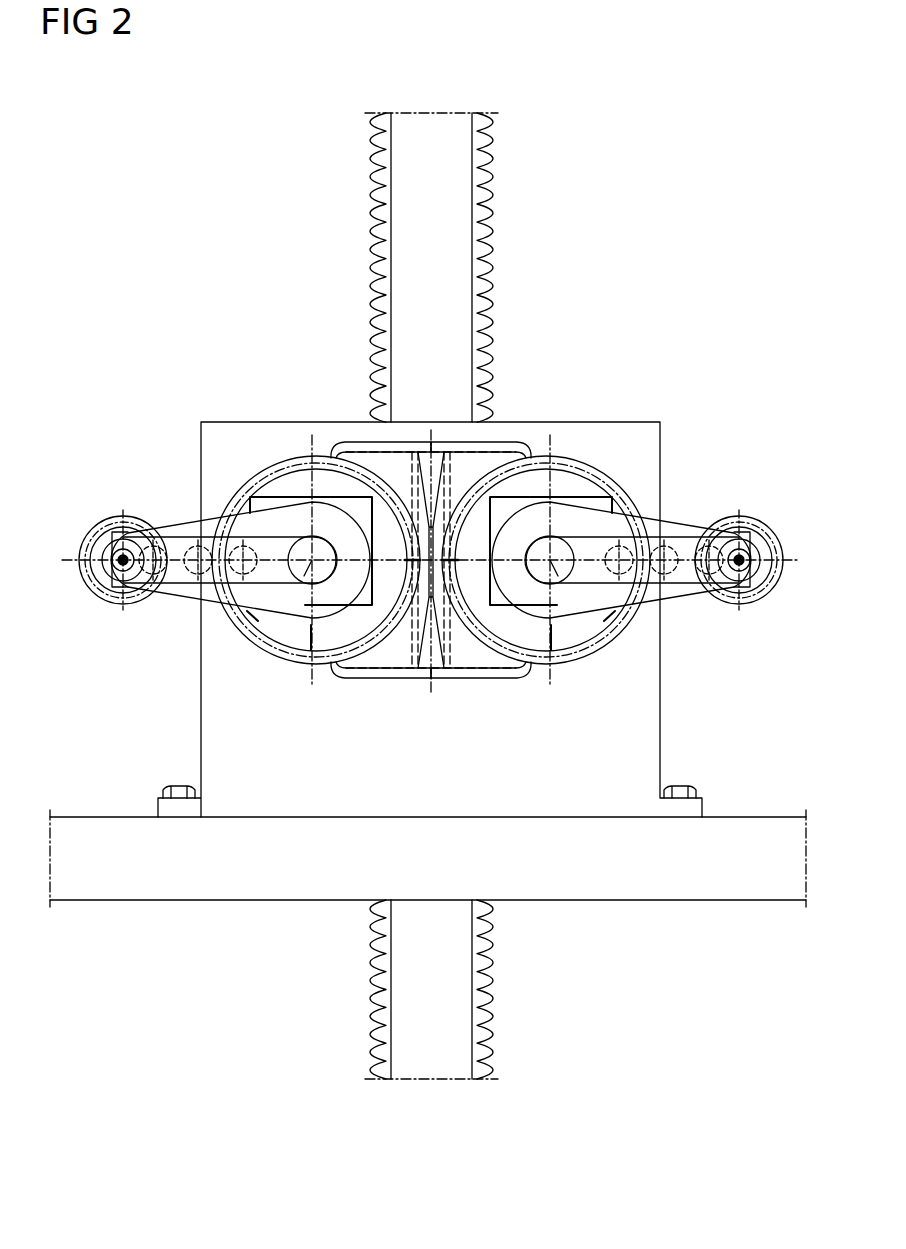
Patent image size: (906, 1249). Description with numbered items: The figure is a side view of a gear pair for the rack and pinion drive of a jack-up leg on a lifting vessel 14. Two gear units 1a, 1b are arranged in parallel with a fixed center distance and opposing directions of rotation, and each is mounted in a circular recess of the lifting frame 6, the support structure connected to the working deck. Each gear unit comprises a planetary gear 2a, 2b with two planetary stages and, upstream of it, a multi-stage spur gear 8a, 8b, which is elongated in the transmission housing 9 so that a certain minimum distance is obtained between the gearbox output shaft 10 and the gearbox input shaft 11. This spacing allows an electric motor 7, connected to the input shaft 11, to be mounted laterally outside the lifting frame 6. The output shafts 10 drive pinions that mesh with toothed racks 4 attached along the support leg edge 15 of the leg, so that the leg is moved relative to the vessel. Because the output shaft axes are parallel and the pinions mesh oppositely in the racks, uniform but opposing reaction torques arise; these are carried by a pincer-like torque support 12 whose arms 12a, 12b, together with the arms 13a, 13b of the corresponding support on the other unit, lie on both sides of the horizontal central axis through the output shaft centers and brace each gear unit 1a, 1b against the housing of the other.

The gear unit 1a is at (148, 422).
The gear unit 1b is at (724, 422).
The planetary gear 2a is at (270, 656).
The planetary gear 2b is at (607, 656).
The toothed rack 4 is at (374, 212).
The lifting frame 6 is at (624, 435).
The electric motor 7 is at (116, 514).
The spur gear stages 8a is at (175, 520).
The spur gear stages 8b is at (681, 520).
The transmission housing 9 is at (238, 656).
The gearbox output shaft 10 is at (325, 570).
The gearbox input shaft 11 is at (95, 530).
The torque support 12 is at (418, 680).
The pincer arm 12a is at (342, 441).
The pincer arm 12b is at (342, 680).
The pincer arm 13a is at (522, 441).
The pincer arm 13b is at (522, 680).
The lifting vessel 14 is at (771, 828).
The support leg edge 15 is at (439, 128).